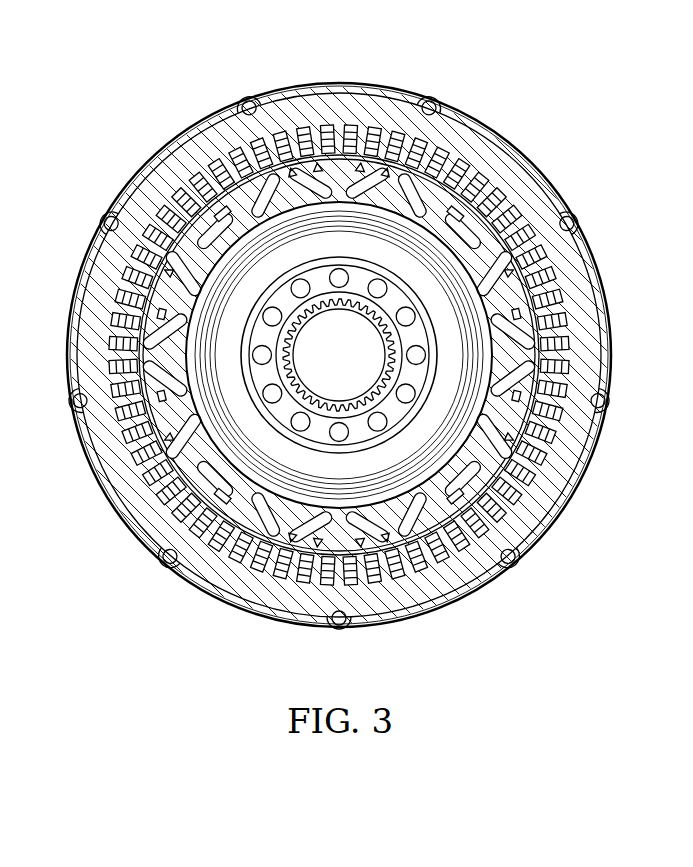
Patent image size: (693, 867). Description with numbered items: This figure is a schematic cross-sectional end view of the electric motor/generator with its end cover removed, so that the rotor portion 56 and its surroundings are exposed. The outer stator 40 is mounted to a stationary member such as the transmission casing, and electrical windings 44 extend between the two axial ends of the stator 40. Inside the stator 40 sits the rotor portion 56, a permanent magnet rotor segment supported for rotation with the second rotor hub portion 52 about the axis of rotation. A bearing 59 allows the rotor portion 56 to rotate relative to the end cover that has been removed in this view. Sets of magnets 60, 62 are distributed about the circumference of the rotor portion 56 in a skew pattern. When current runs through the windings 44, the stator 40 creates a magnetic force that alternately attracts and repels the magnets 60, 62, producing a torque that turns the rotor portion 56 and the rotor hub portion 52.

The stator 40 is at (300, 110).
The electrical windings 44 is at (340, 118).
The second rotor hub portion 52 is at (450, 352).
The second rotor portion 56 is at (460, 232).
The bearing 59 is at (390, 413).
The magnets 60 is at (462, 207).
The magnets 62 is at (437, 190).